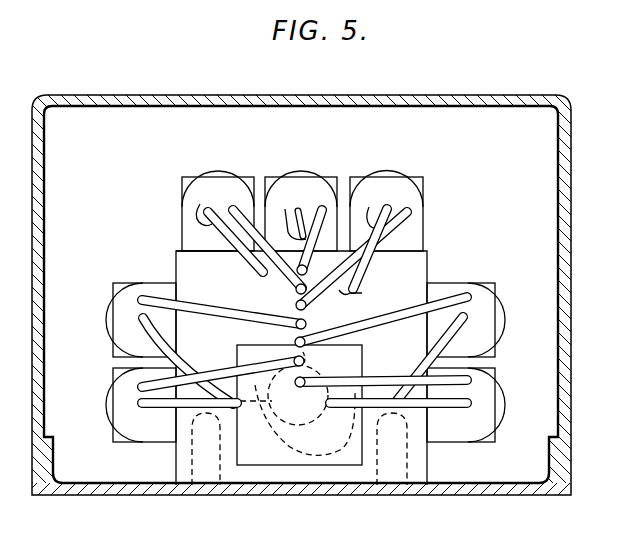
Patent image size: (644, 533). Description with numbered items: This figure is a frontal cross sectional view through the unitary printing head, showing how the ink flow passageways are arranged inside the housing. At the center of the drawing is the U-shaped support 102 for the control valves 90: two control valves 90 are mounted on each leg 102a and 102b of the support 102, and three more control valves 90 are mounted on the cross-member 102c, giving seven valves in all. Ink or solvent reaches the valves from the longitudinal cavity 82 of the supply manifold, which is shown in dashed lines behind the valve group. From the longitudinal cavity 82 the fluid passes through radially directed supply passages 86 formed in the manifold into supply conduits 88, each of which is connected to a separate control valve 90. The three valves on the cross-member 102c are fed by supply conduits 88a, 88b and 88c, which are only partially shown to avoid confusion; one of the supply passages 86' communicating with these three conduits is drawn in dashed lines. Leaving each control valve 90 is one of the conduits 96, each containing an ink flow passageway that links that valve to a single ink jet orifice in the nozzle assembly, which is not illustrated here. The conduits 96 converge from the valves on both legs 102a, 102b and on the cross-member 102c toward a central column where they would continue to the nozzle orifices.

The longitudinal cavity 82 is at (302, 425).
The radially directed supply passage 86 is at (299, 415).
The supply passage 86' is at (324, 361).
The supply conduit 88 is at (143, 331).
The supply conduit 88a is at (218, 214).
The supply conduit 88b is at (301, 214).
The supply conduit 88c is at (386, 214).
The control valve 90 is at (283, 177).
The conduit 96 is at (235, 317).
The support 102 is at (427, 263).
The leg 102a is at (427, 463).
The leg 102b is at (176, 462).
The cross member 102c is at (178, 264).